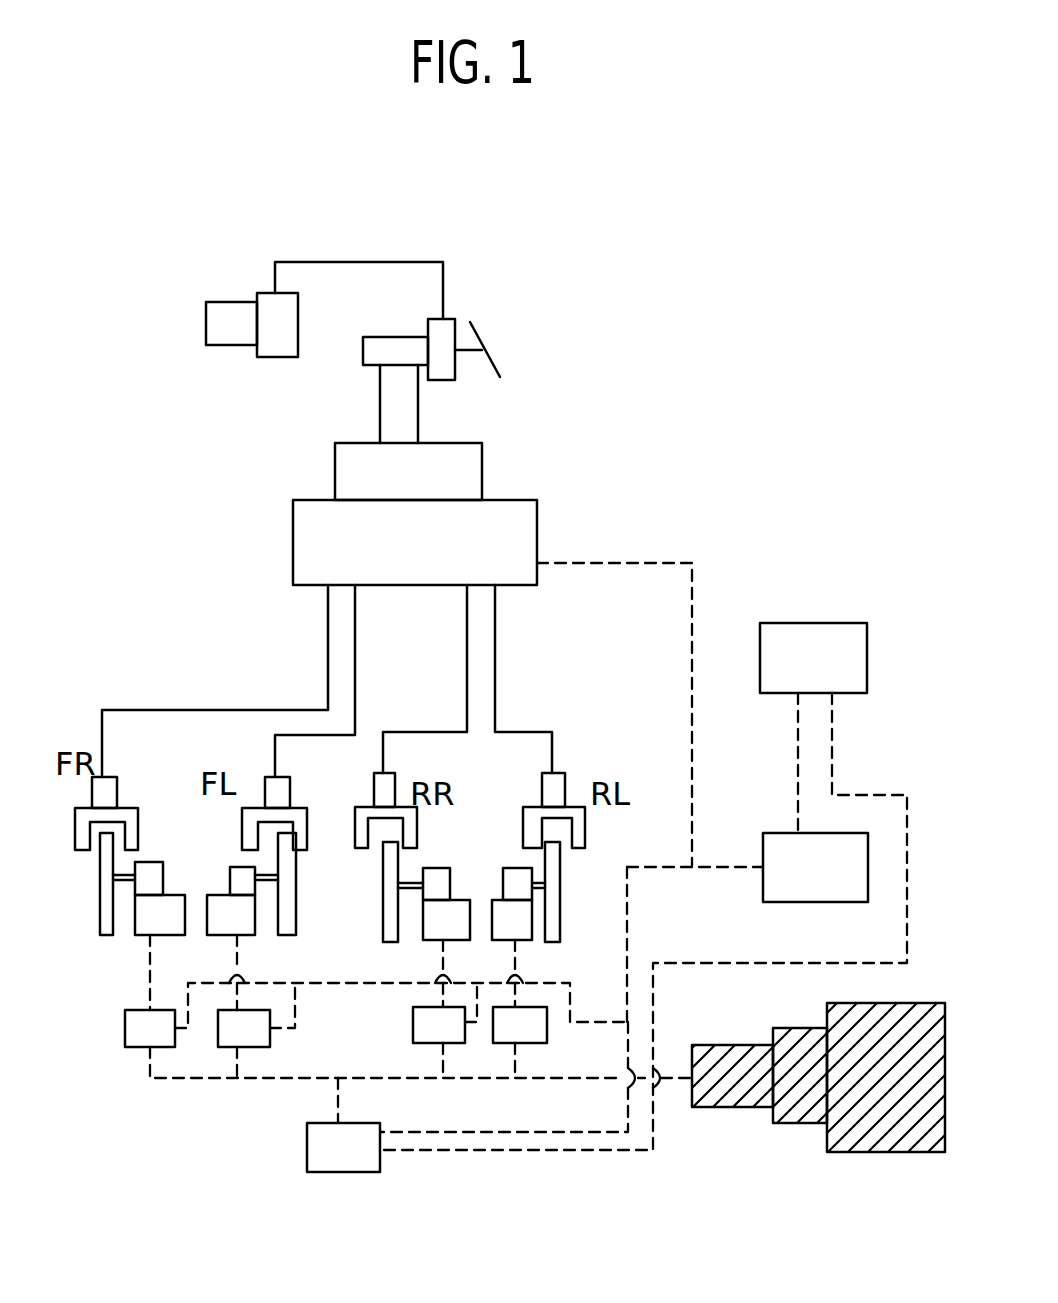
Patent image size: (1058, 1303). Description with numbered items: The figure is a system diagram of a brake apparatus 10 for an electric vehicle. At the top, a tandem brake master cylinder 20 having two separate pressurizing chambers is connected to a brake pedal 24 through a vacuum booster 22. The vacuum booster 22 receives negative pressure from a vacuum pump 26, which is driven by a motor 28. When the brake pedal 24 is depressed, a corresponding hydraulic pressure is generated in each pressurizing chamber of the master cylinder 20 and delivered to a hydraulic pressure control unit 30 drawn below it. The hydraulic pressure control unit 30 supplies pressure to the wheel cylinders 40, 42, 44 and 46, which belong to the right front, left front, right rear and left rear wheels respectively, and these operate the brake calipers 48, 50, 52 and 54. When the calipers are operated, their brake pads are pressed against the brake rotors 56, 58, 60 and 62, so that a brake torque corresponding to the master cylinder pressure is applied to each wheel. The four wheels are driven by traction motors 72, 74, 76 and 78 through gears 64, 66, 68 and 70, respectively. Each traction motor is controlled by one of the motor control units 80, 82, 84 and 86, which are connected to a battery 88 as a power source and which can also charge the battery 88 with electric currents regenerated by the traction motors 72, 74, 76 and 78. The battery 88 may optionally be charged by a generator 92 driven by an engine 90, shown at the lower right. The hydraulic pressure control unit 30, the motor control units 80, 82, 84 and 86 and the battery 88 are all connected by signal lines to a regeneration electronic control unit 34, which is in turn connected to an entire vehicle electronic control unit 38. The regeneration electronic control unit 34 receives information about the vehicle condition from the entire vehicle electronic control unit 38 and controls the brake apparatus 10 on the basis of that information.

The brake apparatus 10 is at (658, 217).
The tandem brake master cylinder 20 is at (381, 342).
The vacuum booster 22 is at (452, 329).
The brake pedal 24 is at (502, 373).
The vacuum pump 26 is at (284, 348).
The motor 28 is at (206, 325).
The hydraulic pressure control unit 30 is at (527, 533).
The regeneration electronic control unit 34 is at (855, 902).
The entire vehicle electronic control unit 38 is at (867, 650).
The wheel cylinder 40 is at (100, 770).
The wheel cylinder 42 is at (267, 776).
The wheel cylinder 44 is at (396, 784).
The wheel cylinder 46 is at (564, 789).
The brake caliper 48 is at (118, 800).
The brake caliper 50 is at (292, 808).
The brake caliper 52 is at (429, 822).
The brake caliper 54 is at (585, 825).
The brake rotor 56 is at (102, 905).
The brake rotor 58 is at (297, 909).
The brake rotor 60 is at (383, 883).
The brake rotor 62 is at (560, 890).
The gear 64 is at (151, 862).
The gear 66 is at (233, 872).
The gear 68 is at (435, 874).
The gear 70 is at (512, 870).
The traction motor 72 is at (150, 933).
The traction motor 74 is at (243, 935).
The traction motor 76 is at (424, 924).
The traction motor 78 is at (520, 940).
The motor control unit 80 is at (125, 1028).
The motor control unit 82 is at (270, 1030).
The motor control unit 84 is at (413, 1020).
The motor control unit 86 is at (547, 1040).
The battery 88 is at (380, 1165).
The engine 90 is at (900, 1152).
The generator 92 is at (720, 1107).